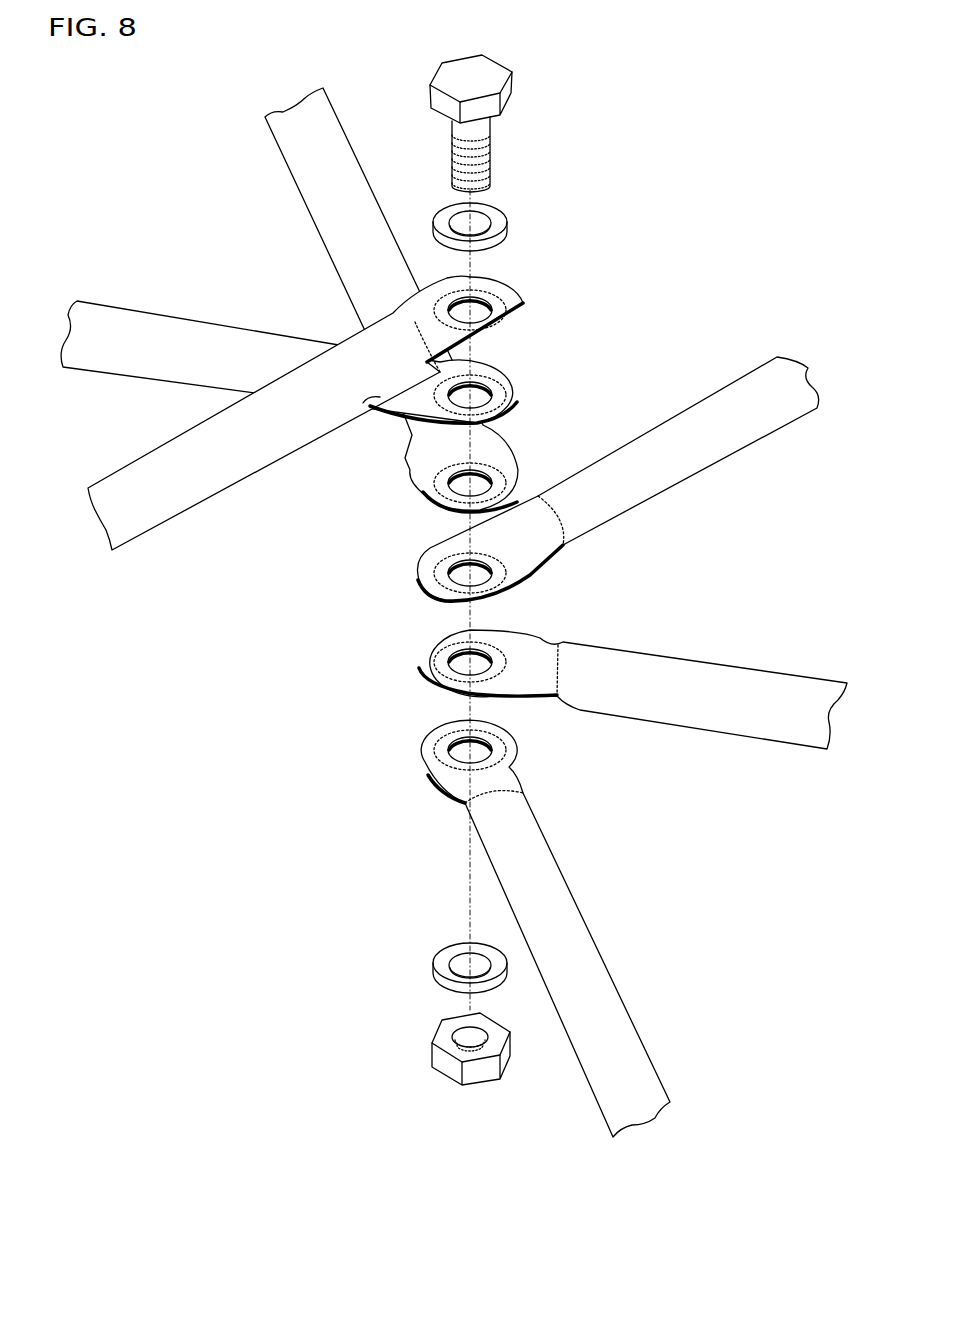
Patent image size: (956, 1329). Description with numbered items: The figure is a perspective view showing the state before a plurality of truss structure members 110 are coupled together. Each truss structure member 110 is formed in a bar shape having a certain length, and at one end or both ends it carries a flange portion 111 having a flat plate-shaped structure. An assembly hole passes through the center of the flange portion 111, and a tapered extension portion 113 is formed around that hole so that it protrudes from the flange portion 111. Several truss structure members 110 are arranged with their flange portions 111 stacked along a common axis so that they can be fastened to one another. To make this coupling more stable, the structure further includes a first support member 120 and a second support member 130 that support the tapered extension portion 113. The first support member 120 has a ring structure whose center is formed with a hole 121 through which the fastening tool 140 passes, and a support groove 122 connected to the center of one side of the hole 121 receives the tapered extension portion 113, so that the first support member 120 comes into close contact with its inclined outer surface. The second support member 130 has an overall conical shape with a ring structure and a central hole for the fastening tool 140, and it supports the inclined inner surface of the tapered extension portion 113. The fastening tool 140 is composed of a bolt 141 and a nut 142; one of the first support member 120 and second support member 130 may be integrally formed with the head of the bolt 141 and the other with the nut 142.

The truss structure member 110 is at (292, 172).
The flange portion 111 is at (473, 532).
The tapered extension portion 113 is at (502, 312).
The first support member 120 is at (427, 928).
The hole 121 is at (448, 964).
The support groove 122 is at (445, 960).
The second support member 130 is at (507, 218).
The fastening tool 140 is at (460, 573).
The bolt 141 is at (490, 130).
The nut 142 is at (432, 1054).